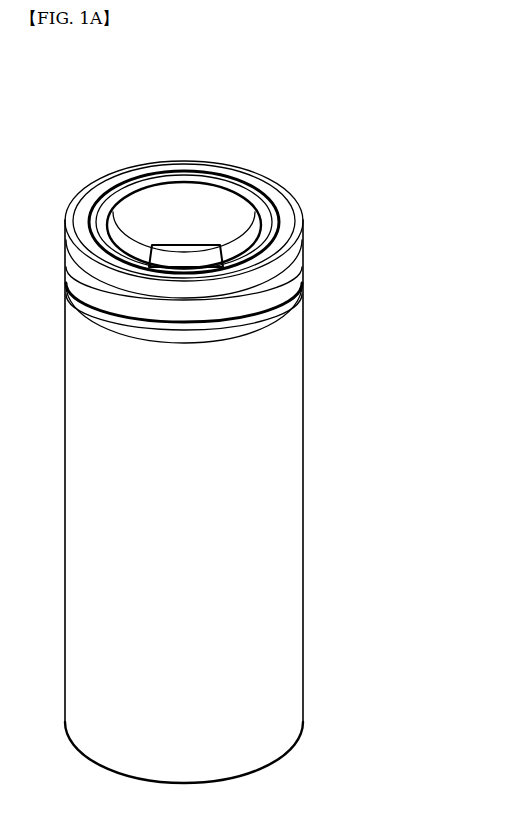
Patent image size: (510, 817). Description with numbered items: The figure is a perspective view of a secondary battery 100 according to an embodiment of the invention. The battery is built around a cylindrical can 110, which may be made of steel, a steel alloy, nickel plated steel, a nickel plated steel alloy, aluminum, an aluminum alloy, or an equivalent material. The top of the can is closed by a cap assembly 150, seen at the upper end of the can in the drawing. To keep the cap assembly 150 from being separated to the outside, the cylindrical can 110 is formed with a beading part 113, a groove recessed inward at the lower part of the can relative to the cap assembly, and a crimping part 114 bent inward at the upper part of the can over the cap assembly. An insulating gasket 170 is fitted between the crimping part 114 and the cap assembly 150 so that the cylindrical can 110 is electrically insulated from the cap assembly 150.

The secondary battery 100 is at (236, 413).
The cylindrical can 110 is at (318, 508).
The beading part 113 is at (304, 272).
The crimping part 114 is at (288, 208).
The cap assembly 150 is at (178, 190).
The insulating gasket 170 is at (246, 180).